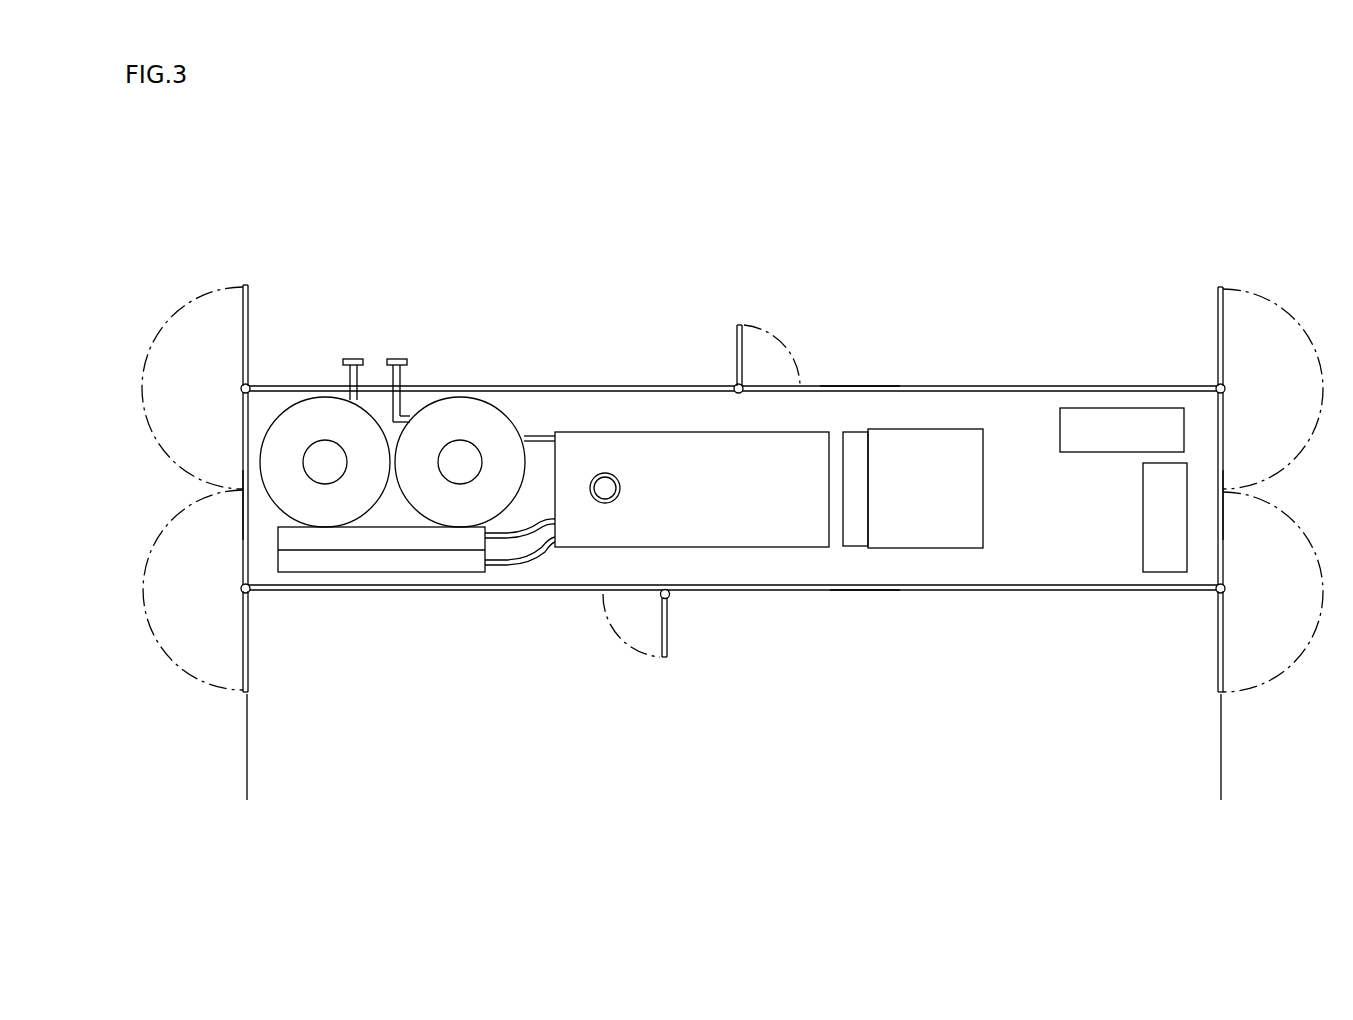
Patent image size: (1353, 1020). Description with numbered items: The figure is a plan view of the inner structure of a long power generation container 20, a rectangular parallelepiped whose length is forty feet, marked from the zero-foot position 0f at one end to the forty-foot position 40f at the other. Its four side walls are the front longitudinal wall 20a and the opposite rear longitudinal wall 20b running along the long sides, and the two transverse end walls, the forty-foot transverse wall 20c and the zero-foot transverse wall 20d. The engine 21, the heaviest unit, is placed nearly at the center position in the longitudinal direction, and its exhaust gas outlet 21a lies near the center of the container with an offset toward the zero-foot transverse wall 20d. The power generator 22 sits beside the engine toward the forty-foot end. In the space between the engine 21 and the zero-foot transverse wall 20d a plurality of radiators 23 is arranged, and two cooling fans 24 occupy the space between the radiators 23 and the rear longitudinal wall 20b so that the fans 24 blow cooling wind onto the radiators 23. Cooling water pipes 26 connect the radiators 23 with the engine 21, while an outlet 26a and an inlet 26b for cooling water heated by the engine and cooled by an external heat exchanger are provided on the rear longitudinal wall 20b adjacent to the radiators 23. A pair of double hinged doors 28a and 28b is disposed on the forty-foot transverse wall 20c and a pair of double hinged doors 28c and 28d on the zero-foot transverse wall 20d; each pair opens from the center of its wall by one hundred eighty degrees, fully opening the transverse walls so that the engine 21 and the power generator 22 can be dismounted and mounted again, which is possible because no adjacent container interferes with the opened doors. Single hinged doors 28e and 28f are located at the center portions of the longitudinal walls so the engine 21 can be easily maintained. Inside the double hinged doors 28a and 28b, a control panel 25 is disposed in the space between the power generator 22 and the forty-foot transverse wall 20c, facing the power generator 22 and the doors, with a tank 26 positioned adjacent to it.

The 40-f container 20 is at (603, 248).
The front longitudinal wall 20a is at (866, 594).
The rear longitudinal wall 20b is at (862, 384).
The 40-f transverse wall 20c is at (1225, 512).
The 0-f transverse wall 20d is at (241, 512).
The engine 21 is at (750, 525).
The exhaust gas outlet 21a is at (595, 505).
The power generator 22 is at (918, 525).
The radiators 23 is at (382, 560).
The cooling fans 24 is at (328, 512).
The control panel 25 is at (1163, 560).
The cooling water pipes 26 is at (535, 430).
The outlet 26a is at (395, 358).
The inlet 26b is at (350, 358).
The double hinged door 28a is at (1225, 690).
The double hinged door 28b is at (1225, 290).
The double hinged door 28c is at (243, 690).
The double hinged door 28d is at (243, 290).
The single hinged door 28e is at (668, 648).
The single hinged door 28f is at (736, 345).
The 0-f position 0f is at (249, 791).
The 40-f position 40f is at (1219, 791).